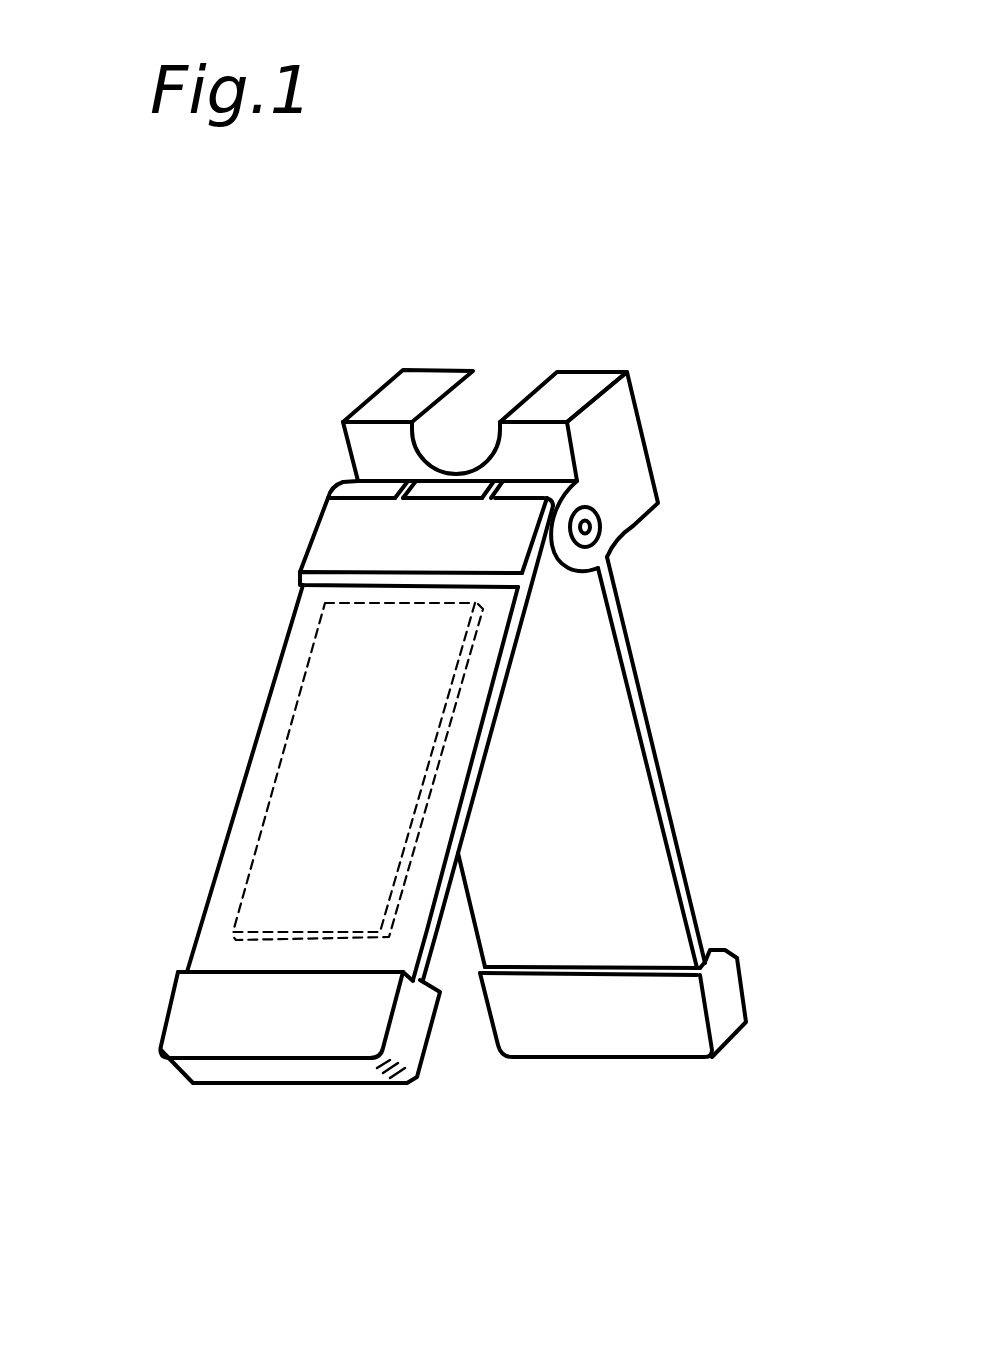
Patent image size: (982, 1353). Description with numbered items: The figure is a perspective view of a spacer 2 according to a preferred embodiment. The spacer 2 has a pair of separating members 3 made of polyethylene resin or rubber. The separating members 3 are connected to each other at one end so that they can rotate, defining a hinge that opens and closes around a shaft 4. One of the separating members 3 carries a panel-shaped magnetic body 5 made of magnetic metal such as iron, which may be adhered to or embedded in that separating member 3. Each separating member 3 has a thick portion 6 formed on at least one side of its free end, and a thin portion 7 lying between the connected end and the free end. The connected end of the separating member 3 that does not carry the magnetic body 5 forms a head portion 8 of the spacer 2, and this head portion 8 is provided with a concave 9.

The spacer 2 is at (706, 380).
The separating member 3 is at (202, 823).
The shaft 4 is at (600, 527).
The magnetic body 5 is at (263, 742).
The thick portion 6 is at (203, 1017).
The thin portion 7 is at (458, 771).
The head portion 8 is at (617, 443).
The concave 9 is at (460, 418).